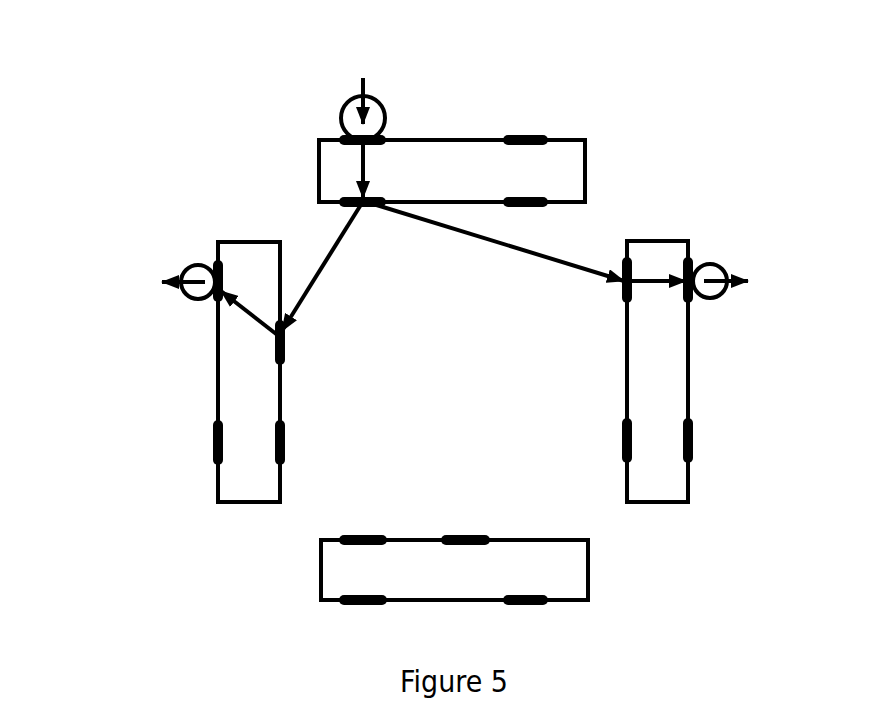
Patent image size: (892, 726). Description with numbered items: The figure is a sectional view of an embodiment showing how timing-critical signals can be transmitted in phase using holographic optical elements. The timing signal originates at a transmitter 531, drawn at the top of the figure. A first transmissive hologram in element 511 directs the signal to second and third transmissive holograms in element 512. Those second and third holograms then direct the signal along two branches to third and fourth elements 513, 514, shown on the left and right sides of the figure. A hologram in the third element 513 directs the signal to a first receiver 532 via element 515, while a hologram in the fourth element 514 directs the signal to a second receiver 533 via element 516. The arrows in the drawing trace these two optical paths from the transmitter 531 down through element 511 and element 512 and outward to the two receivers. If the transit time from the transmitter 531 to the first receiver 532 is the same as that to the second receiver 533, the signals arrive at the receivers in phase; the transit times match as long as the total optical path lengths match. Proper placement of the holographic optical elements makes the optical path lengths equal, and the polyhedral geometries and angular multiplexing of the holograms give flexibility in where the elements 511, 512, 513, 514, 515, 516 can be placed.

The element containing first transmissive hologram 511 is at (388, 138).
The element containing second and third transmissive holograms 512 is at (330, 200).
The third element 513 is at (281, 330).
The fourth element 514 is at (625, 300).
The element 515 is at (216, 303).
The element 516 is at (689, 264).
The transmitter 531 is at (342, 118).
The first receiver 532 is at (181, 302).
The second receiver 533 is at (712, 264).